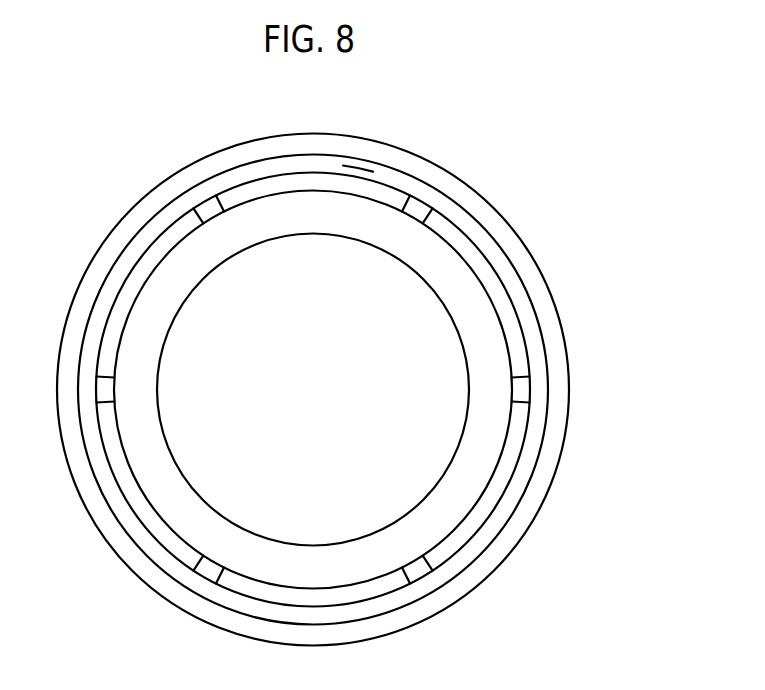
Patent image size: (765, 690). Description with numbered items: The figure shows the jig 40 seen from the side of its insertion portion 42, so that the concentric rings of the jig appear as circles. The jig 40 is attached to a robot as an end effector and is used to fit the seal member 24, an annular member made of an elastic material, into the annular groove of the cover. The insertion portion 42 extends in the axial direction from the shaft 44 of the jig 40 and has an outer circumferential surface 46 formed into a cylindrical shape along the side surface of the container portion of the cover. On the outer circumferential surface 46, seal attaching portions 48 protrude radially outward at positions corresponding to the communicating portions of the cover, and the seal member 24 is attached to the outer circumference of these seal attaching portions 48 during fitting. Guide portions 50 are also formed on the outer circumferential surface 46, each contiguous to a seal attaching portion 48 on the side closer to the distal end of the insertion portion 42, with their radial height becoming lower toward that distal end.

The jig 40 is at (348, 375).
The shaft 44 is at (566, 322).
The seal member 24 is at (383, 175).
The insertion portion 42 is at (327, 346).
The outer circumferential surface 46 is at (488, 285).
The seal attaching portion 48 is at (207, 200).
The guide portion 50 is at (212, 207).